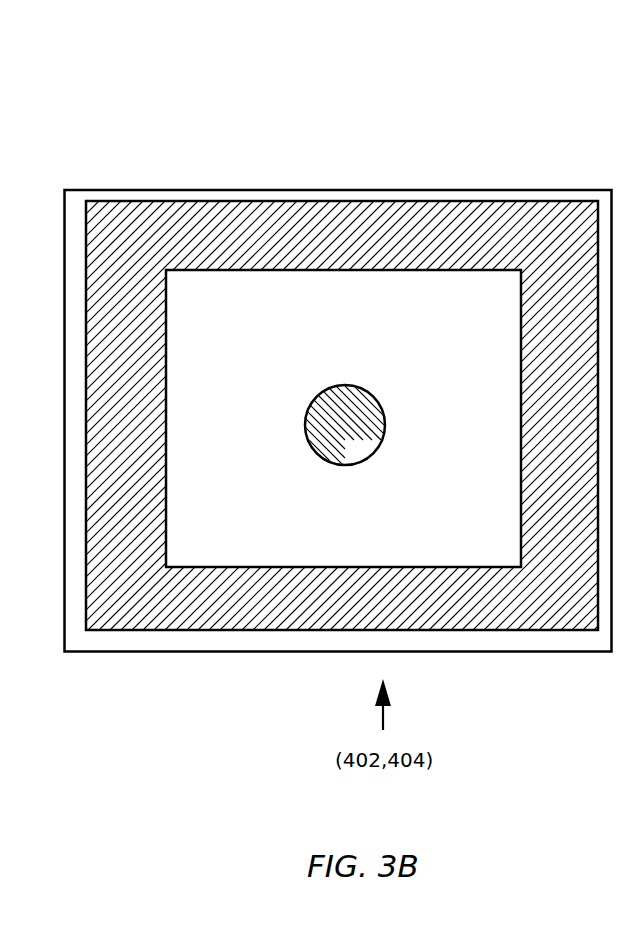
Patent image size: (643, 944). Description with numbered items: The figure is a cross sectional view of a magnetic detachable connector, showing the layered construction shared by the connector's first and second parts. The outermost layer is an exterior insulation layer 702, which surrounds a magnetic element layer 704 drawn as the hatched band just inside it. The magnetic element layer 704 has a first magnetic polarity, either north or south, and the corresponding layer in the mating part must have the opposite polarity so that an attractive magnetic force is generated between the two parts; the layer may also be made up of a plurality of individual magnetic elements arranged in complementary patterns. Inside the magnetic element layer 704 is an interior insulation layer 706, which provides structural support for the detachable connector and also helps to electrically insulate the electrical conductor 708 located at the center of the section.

The exterior insulation layer 702 is at (103, 193).
The magnetic element layer 704 is at (222, 252).
The interior insulation layer 706 is at (343, 418).
The electrical conductor 708 is at (338, 385).